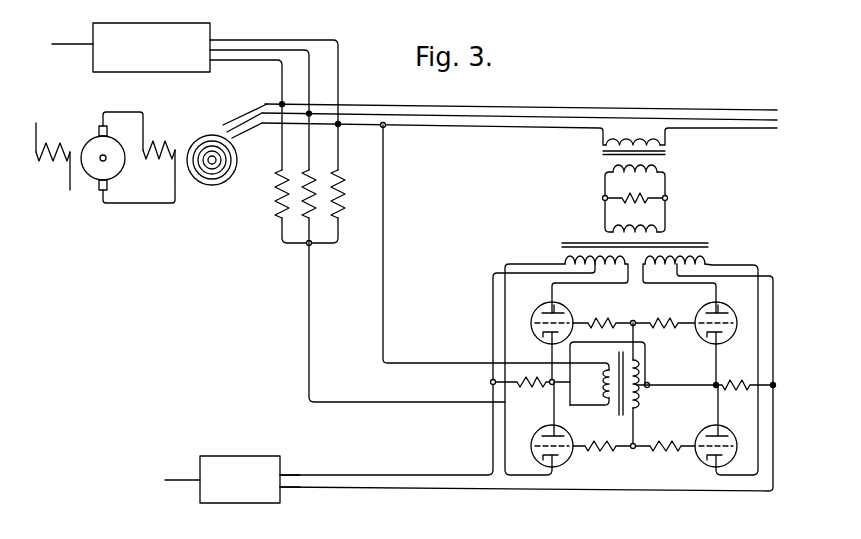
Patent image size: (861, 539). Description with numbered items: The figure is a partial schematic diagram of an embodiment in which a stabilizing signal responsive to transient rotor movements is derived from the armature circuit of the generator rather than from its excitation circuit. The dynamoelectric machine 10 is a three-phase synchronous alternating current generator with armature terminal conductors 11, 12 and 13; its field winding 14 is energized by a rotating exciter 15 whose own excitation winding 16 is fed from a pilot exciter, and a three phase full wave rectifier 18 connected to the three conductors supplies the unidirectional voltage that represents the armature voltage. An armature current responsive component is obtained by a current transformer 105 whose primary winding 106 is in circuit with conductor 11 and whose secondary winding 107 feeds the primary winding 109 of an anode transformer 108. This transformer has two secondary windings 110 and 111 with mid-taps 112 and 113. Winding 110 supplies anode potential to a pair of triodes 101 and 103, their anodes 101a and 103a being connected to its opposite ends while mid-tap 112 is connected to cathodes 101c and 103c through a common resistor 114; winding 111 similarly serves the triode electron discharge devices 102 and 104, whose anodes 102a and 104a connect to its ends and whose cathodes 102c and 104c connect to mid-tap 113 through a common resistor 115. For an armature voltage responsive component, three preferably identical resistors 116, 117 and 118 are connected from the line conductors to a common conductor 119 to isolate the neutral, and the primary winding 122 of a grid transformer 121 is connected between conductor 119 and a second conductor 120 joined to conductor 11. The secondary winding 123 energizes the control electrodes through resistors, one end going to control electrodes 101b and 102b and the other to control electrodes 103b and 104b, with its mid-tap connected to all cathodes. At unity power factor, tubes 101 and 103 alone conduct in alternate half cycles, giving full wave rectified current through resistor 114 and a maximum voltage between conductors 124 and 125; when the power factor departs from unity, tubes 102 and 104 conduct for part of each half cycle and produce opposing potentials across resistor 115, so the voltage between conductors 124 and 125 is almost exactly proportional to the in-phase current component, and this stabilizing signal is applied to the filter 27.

The dynamoelectric machine 10 is at (212, 186).
The armature terminal conductor 11 is at (405, 129).
The armature terminal conductor 12 is at (430, 121).
The armature terminal conductor 13 is at (410, 106).
The field winding 14 is at (153, 143).
The rotating exciter 15 is at (128, 168).
The excitation winding 16 is at (49, 143).
The three phase full wave rectifier 18 is at (145, 73).
The filter 27 is at (240, 457).
The triode 101 is at (551, 332).
The anode 101a is at (560, 310).
The control electrode 101b is at (533, 318).
The cathode 101c is at (545, 340).
The triode electron discharge device 102 is at (718, 337).
The anode 102a is at (722, 311).
The control electrode 102b is at (702, 314).
The cathode 102c is at (729, 339).
The triode 103 is at (550, 369).
The anode 103a is at (562, 458).
The control electrode 103b is at (560, 437).
The cathode 103c is at (542, 430).
The triode electron discharge device 104 is at (710, 370).
The anode 104a is at (700, 458).
The control electrode 104b is at (700, 436).
The cathode 104c is at (724, 432).
The current transformer 105 is at (670, 156).
The primary winding 106 is at (666, 143).
The secondary winding 107 is at (660, 170).
The anode transformer 108 is at (706, 243).
The primary winding 109 is at (660, 228).
The secondary winding 110 is at (563, 260).
The secondary winding 111 is at (707, 261).
The mid-tap 112 is at (590, 288).
The mid-tap 113 is at (676, 268).
The common resistor 114 is at (490, 386).
The common resistor 115 is at (731, 381).
The resistor 116 is at (275, 200).
The resistor 117 is at (302, 217).
The resistor 118 is at (342, 172).
The common conductor 119 is at (310, 350).
The second conductor 120 is at (384, 308).
The grid transformer 121 is at (614, 354).
The primary winding 122 is at (604, 386).
The secondary winding 123 is at (641, 388).
The conductor 124 is at (334, 476).
The conductor 125 is at (300, 489).